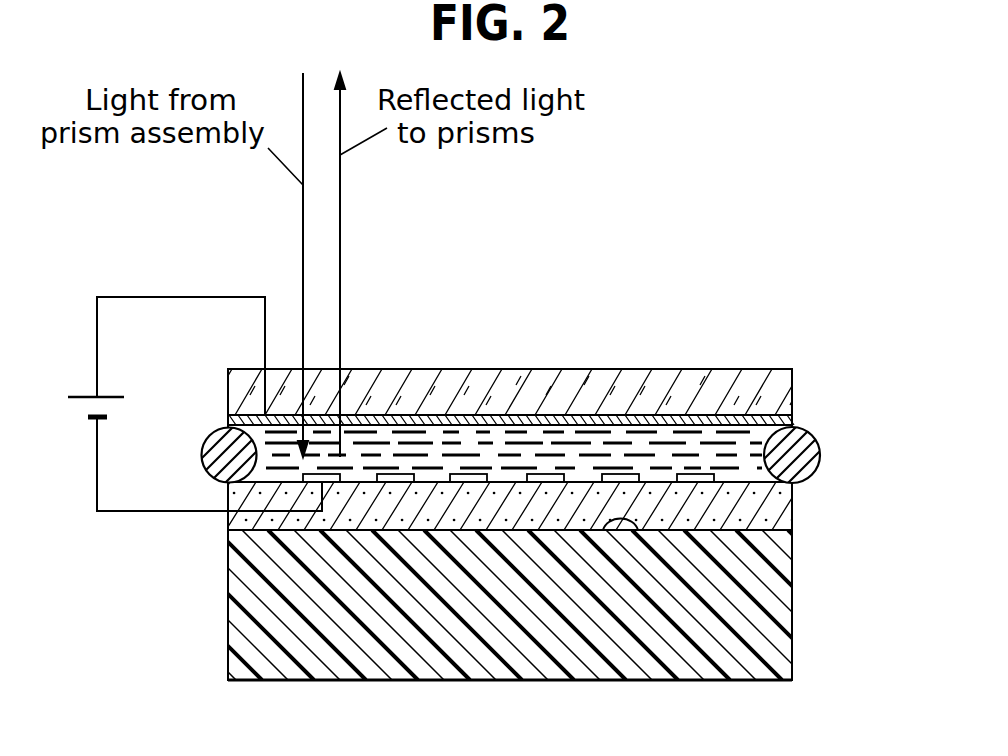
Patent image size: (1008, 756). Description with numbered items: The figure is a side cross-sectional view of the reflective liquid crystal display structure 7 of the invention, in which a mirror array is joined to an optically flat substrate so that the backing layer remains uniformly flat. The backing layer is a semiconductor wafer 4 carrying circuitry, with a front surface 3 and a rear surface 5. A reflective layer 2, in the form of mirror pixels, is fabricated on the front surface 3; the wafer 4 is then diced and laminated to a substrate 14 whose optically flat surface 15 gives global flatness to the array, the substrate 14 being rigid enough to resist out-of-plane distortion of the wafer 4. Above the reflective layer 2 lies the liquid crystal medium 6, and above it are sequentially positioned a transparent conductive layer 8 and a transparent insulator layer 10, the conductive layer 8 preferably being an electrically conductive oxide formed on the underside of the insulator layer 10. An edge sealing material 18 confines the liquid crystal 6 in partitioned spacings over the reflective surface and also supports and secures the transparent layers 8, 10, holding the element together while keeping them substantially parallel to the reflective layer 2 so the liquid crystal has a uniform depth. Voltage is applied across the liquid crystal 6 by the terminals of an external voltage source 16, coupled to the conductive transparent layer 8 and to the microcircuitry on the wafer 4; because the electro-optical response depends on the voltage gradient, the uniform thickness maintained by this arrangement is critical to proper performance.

The reflective layer 2 is at (693, 474).
The front surface 3 is at (430, 482).
The semiconductor wafer 4 is at (793, 509).
The rear surface 5 is at (488, 530).
The liquid crystal medium 6 is at (503, 445).
The structure 7 is at (723, 305).
The transparent conductive layer 8 is at (793, 421).
The transparent insulator layer 10 is at (793, 386).
The substrate 14 is at (793, 600).
The optically flat surface 15 is at (638, 530).
The external voltage source 16 is at (68, 433).
The edge sealing material 18 is at (820, 452).